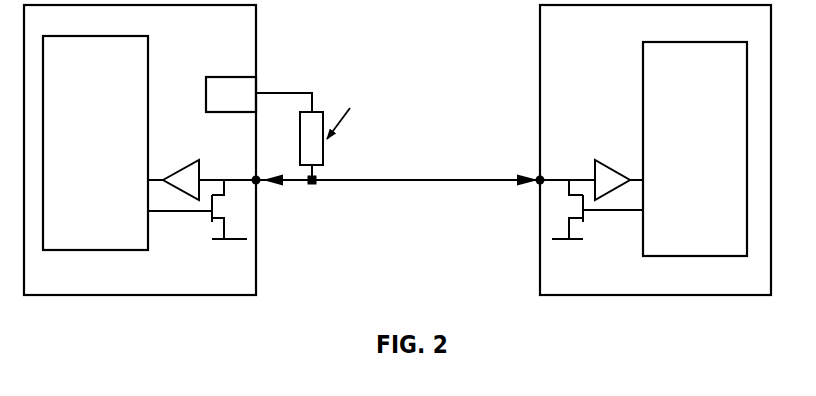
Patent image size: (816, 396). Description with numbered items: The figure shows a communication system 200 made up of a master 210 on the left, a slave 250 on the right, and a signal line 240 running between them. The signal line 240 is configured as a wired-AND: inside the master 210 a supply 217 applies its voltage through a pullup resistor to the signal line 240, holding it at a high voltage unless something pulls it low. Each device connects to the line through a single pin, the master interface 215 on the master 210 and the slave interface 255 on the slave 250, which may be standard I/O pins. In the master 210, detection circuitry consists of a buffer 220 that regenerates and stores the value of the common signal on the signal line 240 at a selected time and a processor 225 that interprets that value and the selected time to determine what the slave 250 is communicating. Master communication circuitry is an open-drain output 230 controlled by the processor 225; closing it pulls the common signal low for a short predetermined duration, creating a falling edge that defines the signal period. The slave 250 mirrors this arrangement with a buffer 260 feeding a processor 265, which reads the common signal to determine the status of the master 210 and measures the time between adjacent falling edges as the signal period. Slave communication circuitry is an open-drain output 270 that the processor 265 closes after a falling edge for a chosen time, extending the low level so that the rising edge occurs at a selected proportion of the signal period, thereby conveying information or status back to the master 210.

The communication system 200 is at (418, 46).
The master 210 is at (217, 42).
The master interface 215 is at (261, 185).
The supply 217 is at (249, 108).
The buffer 220 is at (187, 177).
The processor 225 is at (111, 74).
The open-drain output 230 is at (215, 217).
The signal line 240 is at (355, 184).
The slave 250 is at (599, 42).
The slave interface 255 is at (536, 185).
The buffer 260 is at (605, 173).
The processor 265 is at (714, 74).
The open-drain output 270 is at (585, 222).